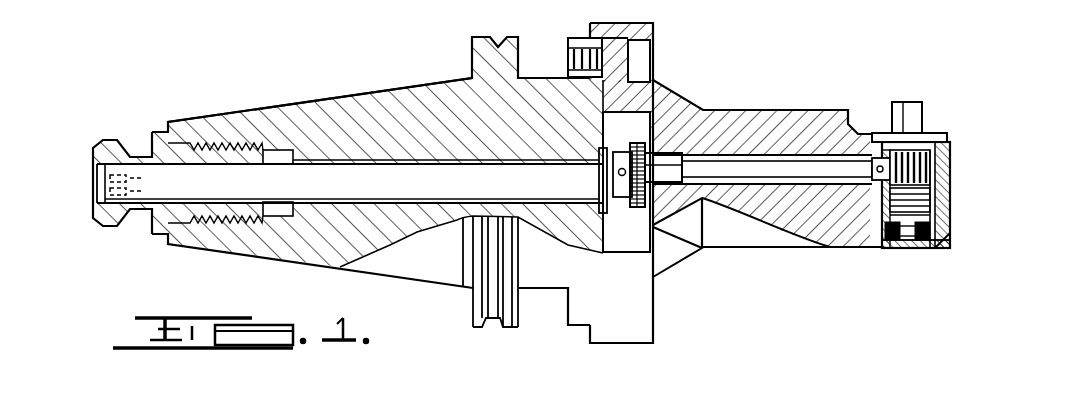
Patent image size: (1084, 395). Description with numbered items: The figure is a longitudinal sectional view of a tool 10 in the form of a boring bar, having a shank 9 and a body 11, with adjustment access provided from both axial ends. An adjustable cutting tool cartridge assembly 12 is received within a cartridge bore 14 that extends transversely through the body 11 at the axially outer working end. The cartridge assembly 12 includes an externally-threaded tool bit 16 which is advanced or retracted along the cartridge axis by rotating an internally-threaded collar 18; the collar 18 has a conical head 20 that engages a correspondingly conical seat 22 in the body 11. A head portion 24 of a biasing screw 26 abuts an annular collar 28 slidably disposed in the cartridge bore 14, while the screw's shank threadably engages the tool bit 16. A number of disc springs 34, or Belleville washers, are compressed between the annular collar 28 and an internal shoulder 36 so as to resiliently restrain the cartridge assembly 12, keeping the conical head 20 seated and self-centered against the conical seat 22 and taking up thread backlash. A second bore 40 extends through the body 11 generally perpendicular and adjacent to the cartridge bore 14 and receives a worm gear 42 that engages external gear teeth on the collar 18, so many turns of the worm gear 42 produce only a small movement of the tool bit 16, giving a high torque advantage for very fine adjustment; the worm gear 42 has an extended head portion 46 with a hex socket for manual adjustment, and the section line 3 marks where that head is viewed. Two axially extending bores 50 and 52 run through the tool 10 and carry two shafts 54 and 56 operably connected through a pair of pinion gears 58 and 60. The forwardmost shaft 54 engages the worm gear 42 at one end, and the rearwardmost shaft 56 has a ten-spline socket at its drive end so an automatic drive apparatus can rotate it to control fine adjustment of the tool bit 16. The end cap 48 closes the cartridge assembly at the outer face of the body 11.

The section line 3- 3 is at (371, 11).
The shank 9 is at (247, 113).
The tool 10 is at (437, 62).
The body 11 is at (797, 130).
The adjustable cutting tool cartridge assembly 12 is at (931, 113).
The cartridge bore 14 is at (875, 207).
The tool bit 16 is at (899, 100).
The collar 18 is at (948, 162).
The conical head 20 is at (952, 142).
The conical seat 22 is at (885, 131).
The head portion 24 is at (900, 250).
The biasing screw 26 is at (907, 255).
The annular collar 28 is at (919, 253).
The disc springs 34 is at (932, 235).
The internal shoulder 36 is at (940, 218).
The second bore 40 is at (867, 194).
The worm gear 42 is at (869, 157).
The extended head portion 46 is at (940, 185).
The end cap 48 is at (950, 155).
The axially extending bore 50 is at (715, 165).
The axially extending bore 52 is at (350, 165).
The forwardmost shaft 54 is at (766, 168).
The rearwardmost shaft 56 is at (425, 178).
The pinion gear / socket 58 is at (133, 140).
The pinion gear 60 is at (637, 208).